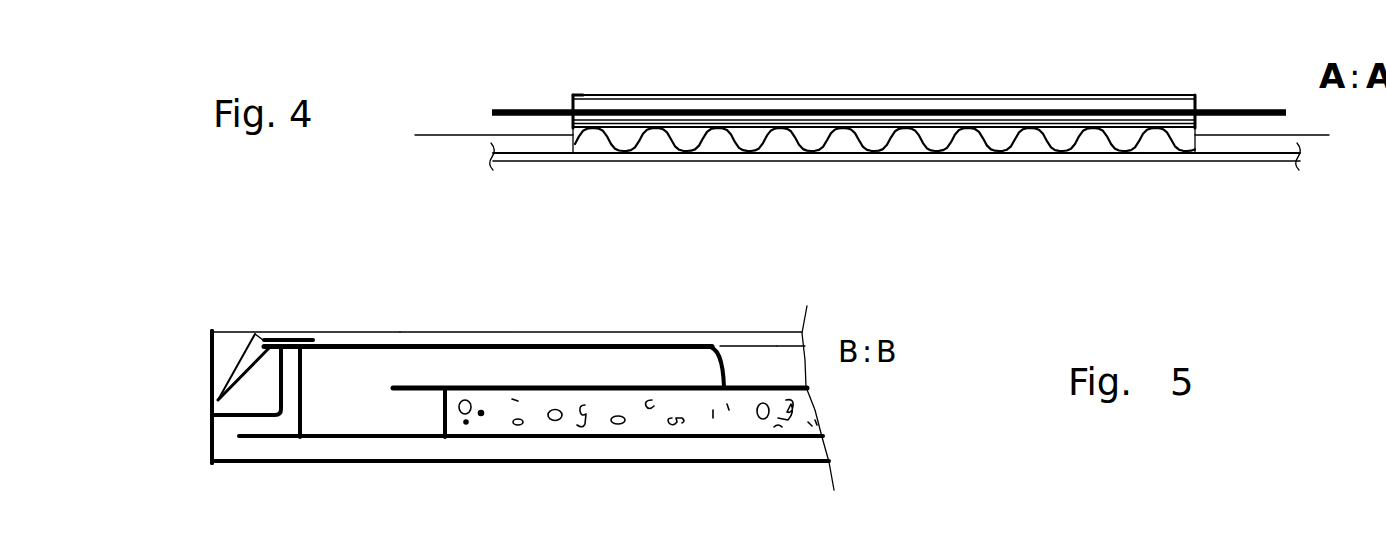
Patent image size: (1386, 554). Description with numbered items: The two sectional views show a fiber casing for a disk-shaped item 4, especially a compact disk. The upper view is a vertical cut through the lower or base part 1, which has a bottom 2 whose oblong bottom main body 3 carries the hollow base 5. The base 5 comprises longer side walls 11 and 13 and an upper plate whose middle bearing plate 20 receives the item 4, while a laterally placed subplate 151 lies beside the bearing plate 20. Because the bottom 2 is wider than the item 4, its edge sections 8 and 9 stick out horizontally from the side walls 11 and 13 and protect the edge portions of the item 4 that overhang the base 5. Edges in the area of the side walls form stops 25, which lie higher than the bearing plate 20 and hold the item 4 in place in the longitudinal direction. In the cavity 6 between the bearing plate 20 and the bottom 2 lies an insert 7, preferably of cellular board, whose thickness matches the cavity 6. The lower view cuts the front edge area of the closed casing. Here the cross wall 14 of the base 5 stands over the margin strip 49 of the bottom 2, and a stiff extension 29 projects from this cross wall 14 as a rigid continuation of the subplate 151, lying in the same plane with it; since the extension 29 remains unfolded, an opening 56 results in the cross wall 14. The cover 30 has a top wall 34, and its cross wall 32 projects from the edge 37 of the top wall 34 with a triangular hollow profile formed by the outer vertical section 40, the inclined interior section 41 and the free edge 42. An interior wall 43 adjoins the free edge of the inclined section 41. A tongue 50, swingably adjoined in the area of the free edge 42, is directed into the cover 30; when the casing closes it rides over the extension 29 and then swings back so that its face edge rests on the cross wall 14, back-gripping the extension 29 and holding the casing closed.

In FIG. 5, the base part 1 is at (247, 314).
In FIG. 4, the bottom 2 is at (1184, 163).
In FIG. 5, the bottom 2 is at (690, 465).
In FIG. 4, the bottom main body 3 is at (1098, 163).
In FIG. 5, the bottom main body 3 is at (622, 465).
In FIG. 4, the disk-shaped item 4 is at (503, 108).
In FIG. 4, the base 5 is at (648, 94).
In FIG. 4, the cavity 6 is at (665, 143).
In FIG. 4, the insert 7 is at (733, 147).
In FIG. 5, the insert 7 is at (737, 413).
In FIG. 4, the edge section 8 is at (568, 155).
In FIG. 4, the edge section 9 is at (1227, 157).
In FIG. 4, the side wall 11 is at (476, 132).
In FIG. 4, the side wall 13 is at (1278, 128).
In FIG. 5, the cross wall 14 is at (303, 393).
In FIG. 4, the bearing plate 20 is at (780, 126).
In FIG. 5, the bearing plate 20 is at (401, 393).
In FIG. 4, the stop 25 is at (570, 106).
In FIG. 5, the stop 25 is at (725, 378).
In FIG. 4, the extension 29 is at (990, 98).
In FIG. 5, the extension 29 is at (292, 335).
In FIG. 5, the cover 30 is at (772, 345).
In FIG. 5, the cross wall 32 is at (211, 345).
In FIG. 5, the top wall 34 is at (562, 331).
In FIG. 5, the edge 37 is at (247, 332).
In FIG. 5, the outer section 40 is at (211, 373).
In FIG. 5, the interior section 41 is at (243, 358).
In FIG. 5, the free edge 42 is at (216, 402).
In FIG. 5, the interior wall 43 is at (777, 347).
In FIG. 5, the margin strip 49 is at (211, 437).
In FIG. 5, the tongue 50 is at (220, 363).
In FIG. 4, the opening 56 is at (897, 108).
In FIG. 5, the opening 56 is at (291, 388).
In FIG. 4, the subplate 151 is at (1104, 97).
In FIG. 5, the subplate 151 is at (432, 340).